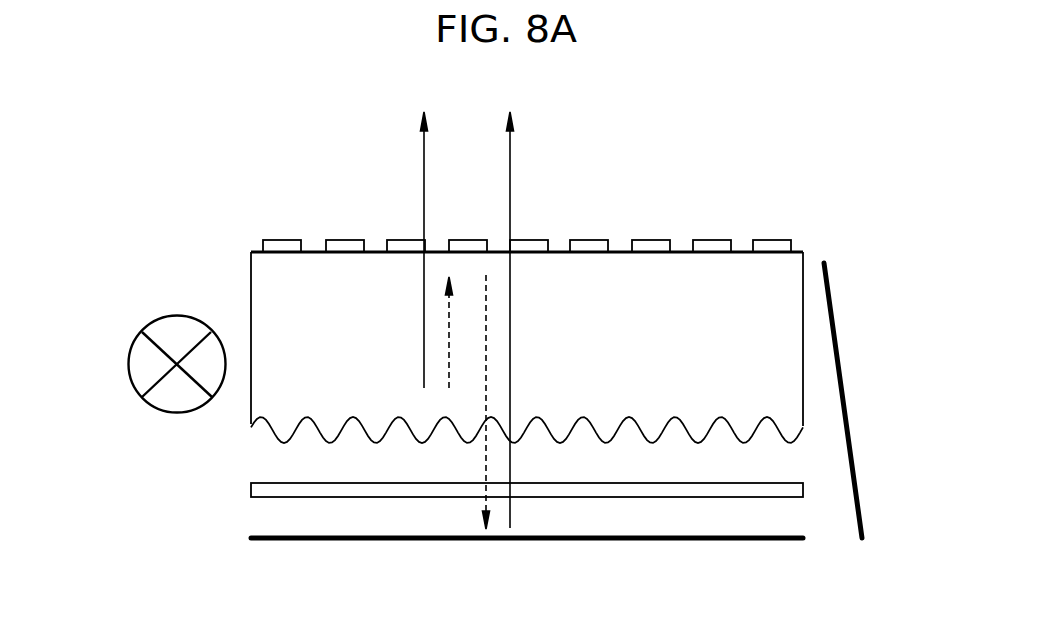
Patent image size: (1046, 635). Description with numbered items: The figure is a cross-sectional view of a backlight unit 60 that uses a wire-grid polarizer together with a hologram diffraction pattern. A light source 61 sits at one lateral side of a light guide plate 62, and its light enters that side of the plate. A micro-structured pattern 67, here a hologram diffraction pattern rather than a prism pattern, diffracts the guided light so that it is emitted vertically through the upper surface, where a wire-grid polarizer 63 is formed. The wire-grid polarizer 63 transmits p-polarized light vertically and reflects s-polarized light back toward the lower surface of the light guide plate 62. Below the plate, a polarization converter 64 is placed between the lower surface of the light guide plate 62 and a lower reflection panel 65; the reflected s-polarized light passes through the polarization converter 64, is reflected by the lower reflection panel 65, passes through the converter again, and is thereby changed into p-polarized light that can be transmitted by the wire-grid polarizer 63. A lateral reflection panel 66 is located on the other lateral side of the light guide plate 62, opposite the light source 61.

The backlight unit 60 is at (491, 352).
The light source 61 is at (128, 364).
The light guide plate 62 is at (505, 323).
The wire-grid polarizer 63 is at (773, 242).
The polarization converter 64 is at (733, 488).
The lower reflection panel 65 is at (737, 542).
The lateral reflection panel 66 is at (846, 403).
The micro-structured pattern 67 is at (270, 432).